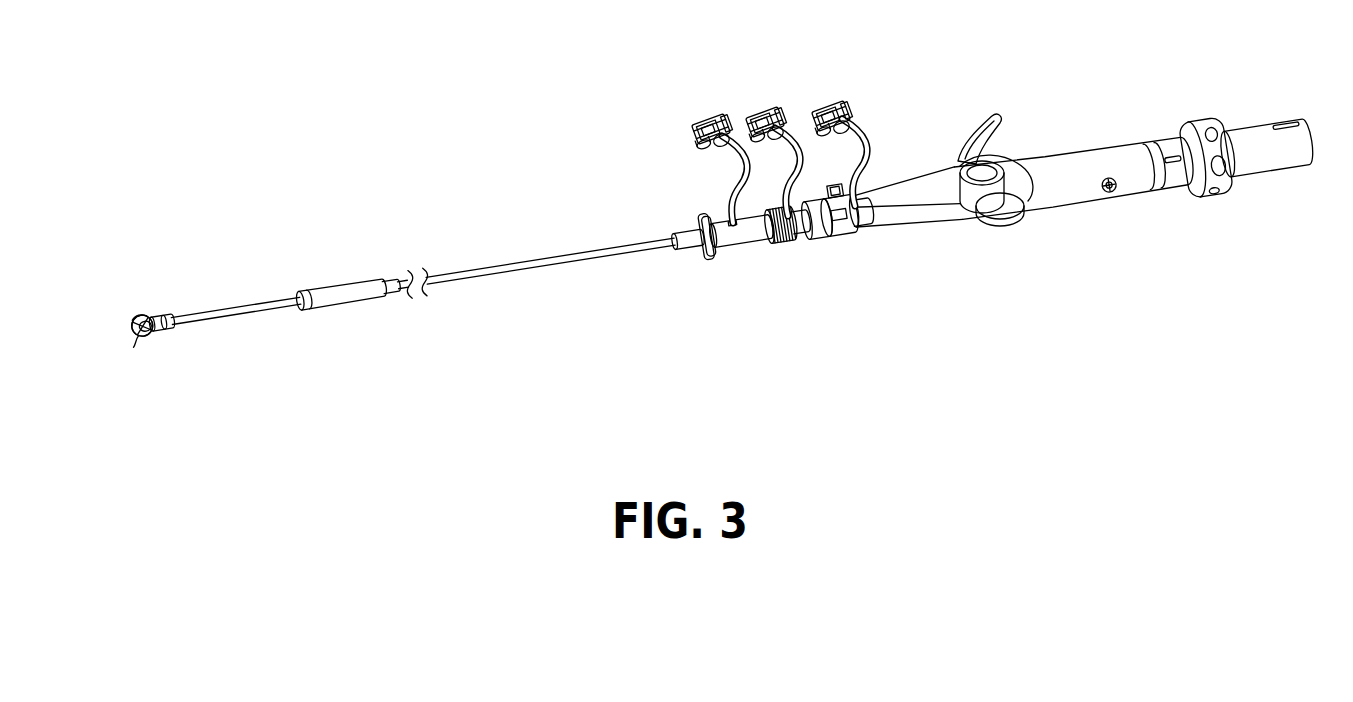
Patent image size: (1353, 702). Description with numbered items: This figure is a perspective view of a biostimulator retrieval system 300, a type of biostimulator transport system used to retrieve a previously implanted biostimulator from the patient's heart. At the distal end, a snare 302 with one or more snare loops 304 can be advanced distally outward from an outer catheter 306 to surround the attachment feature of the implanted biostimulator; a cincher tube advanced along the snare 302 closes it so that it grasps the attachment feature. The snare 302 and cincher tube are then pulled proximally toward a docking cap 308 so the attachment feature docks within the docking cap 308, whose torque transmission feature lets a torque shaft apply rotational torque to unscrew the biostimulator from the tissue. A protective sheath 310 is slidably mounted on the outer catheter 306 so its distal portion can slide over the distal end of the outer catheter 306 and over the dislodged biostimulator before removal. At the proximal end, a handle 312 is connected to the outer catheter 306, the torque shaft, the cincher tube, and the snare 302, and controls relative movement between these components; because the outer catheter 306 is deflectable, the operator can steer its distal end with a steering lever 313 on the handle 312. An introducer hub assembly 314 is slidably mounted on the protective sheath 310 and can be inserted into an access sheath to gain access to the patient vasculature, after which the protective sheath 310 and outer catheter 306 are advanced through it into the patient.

The biostimulator retrieval system 300 is at (341, 103).
The snare 302 is at (146, 340).
The snare loop 304 is at (147, 310).
The outer catheter 306 is at (250, 312).
The docking cap 308 is at (162, 312).
The protective sheath 310 is at (331, 284).
The handle 312 is at (1057, 162).
The steering lever 313 is at (985, 140).
The introducer hub assembly 314 is at (732, 245).